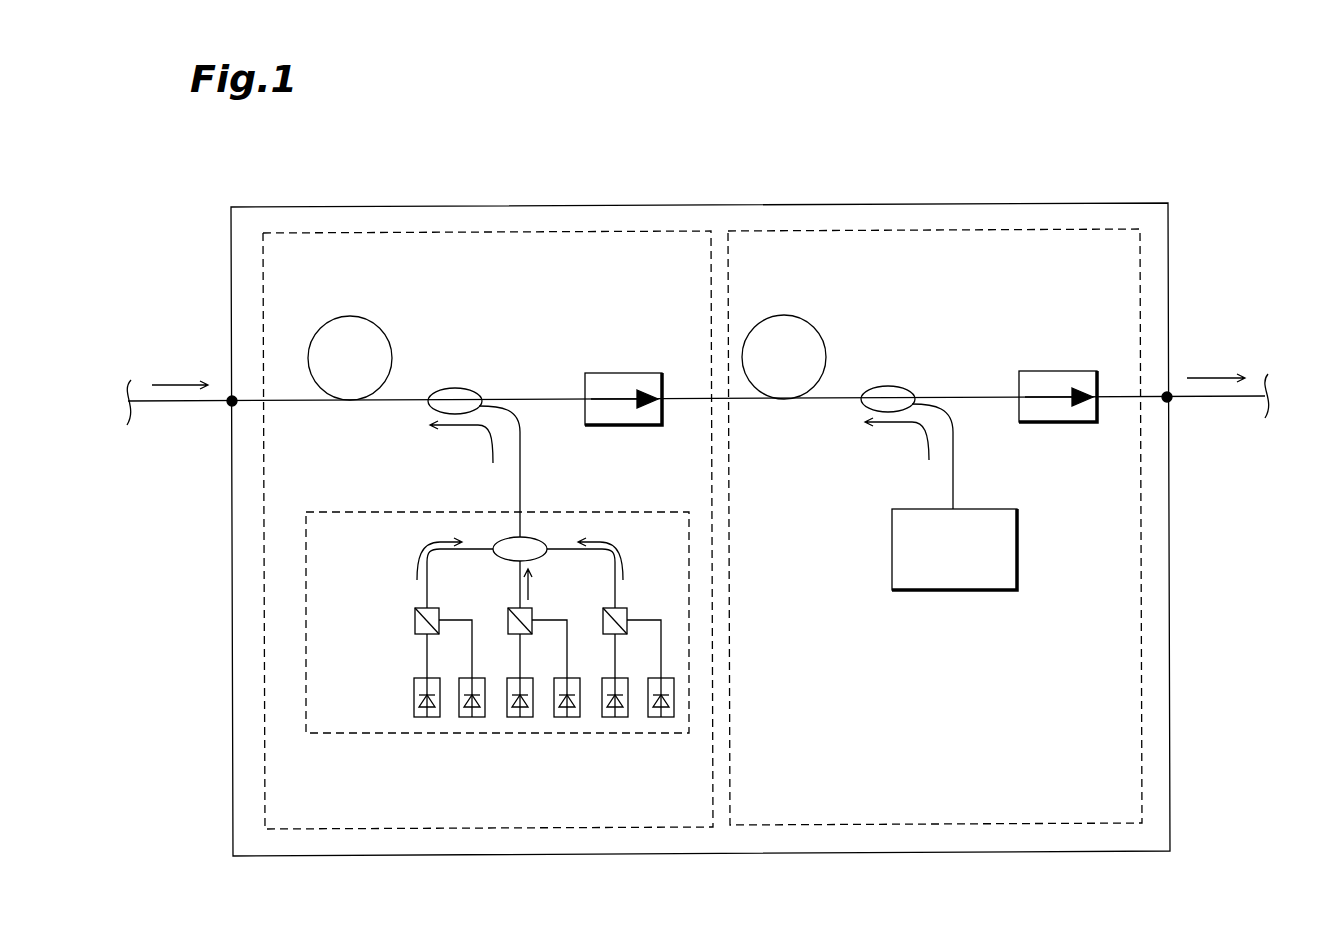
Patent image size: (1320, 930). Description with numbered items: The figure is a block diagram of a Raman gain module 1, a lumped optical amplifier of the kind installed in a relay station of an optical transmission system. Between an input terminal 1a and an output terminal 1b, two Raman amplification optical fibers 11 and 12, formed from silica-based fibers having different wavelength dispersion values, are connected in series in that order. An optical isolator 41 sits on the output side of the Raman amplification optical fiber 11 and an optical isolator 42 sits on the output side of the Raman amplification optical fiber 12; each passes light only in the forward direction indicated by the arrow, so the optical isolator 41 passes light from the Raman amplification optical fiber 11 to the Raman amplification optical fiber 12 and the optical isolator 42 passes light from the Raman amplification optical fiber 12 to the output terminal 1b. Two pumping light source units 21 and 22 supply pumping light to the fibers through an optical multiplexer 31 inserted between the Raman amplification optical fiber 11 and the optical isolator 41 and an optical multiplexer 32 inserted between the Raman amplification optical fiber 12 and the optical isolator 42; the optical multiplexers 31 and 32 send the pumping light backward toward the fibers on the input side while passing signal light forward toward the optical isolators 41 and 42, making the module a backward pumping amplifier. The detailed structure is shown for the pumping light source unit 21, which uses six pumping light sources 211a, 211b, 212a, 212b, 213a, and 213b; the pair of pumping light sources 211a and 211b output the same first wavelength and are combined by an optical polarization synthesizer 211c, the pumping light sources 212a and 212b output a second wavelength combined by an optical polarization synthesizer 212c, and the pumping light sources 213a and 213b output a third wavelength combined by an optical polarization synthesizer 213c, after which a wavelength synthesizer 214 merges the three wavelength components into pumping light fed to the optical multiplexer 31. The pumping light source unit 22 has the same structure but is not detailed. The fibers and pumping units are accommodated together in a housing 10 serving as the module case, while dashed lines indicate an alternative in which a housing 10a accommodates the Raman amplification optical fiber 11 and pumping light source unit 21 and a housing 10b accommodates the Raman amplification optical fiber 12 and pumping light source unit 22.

The Raman gain module 1 is at (952, 190).
The input terminal 1a is at (228, 407).
The output terminal 1b is at (1171, 400).
The housing 10 is at (447, 205).
The housing 10a is at (510, 827).
The housing 10b is at (955, 823).
The Raman amplification optical fiber 11 is at (372, 318).
The Raman amplification optical fiber 12 is at (805, 316).
The optical multiplexer 31 is at (465, 388).
The optical multiplexer 32 is at (895, 385).
The optical isolator 41 is at (635, 373).
The optical isolator 42 is at (1062, 372).
The pumping light source unit 21 is at (630, 510).
The pumping light source unit 22 is at (1020, 543).
The pumping light source 211a is at (424, 718).
The pumping light source 211b is at (471, 718).
The pumping light source 212a is at (517, 718).
The pumping light source 212b is at (566, 718).
The pumping light source 213a is at (610, 718).
The pumping light source 213b is at (657, 718).
The optical polarization synthesizer 211c is at (414, 620).
The optical polarization synthesizer 212c is at (508, 620).
The optical polarization synthesizer 213c is at (623, 608).
The wavelength synthesizer 214 is at (533, 537).